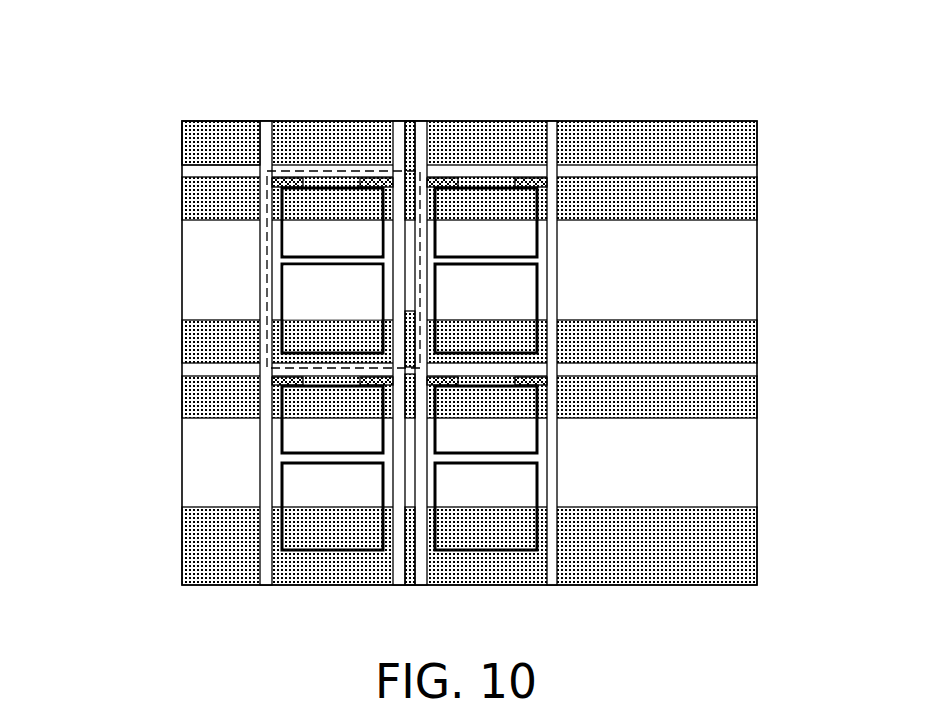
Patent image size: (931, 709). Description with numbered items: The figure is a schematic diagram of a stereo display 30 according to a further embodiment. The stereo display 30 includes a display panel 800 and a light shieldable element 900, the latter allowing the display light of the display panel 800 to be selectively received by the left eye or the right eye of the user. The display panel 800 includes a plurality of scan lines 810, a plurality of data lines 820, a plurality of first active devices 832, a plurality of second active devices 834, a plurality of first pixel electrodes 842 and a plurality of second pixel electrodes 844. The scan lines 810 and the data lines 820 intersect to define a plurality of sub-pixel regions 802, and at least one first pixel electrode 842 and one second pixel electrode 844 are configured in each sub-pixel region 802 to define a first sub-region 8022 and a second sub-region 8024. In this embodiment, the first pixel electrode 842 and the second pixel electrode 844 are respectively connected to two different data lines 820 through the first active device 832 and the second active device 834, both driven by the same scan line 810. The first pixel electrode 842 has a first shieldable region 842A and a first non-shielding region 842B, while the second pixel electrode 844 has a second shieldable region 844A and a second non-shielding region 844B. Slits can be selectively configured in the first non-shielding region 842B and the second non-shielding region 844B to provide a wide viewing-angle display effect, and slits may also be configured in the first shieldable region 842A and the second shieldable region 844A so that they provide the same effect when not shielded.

The display panel 800 is at (740, 274).
The scan line 810 is at (198, 172).
The data line 820 is at (263, 133).
The first active device 832 is at (287, 174).
The second active device 834 is at (370, 176).
The first pixel electrode 842 is at (277, 198).
The first shieldable region 842A is at (372, 212).
The first non-shielding region 842B is at (372, 245).
The first sub-region 8022 is at (334, 138).
The second pixel electrode 844 is at (277, 282).
The second shieldable region 844A is at (306, 298).
The second non-shielding region 844B is at (300, 333).
The second sub-region 8024 is at (207, 315).
The sub-pixel region 802 is at (267, 297).
The light shieldable element 900 is at (772, 122).
The stereo display 30 is at (788, 653).